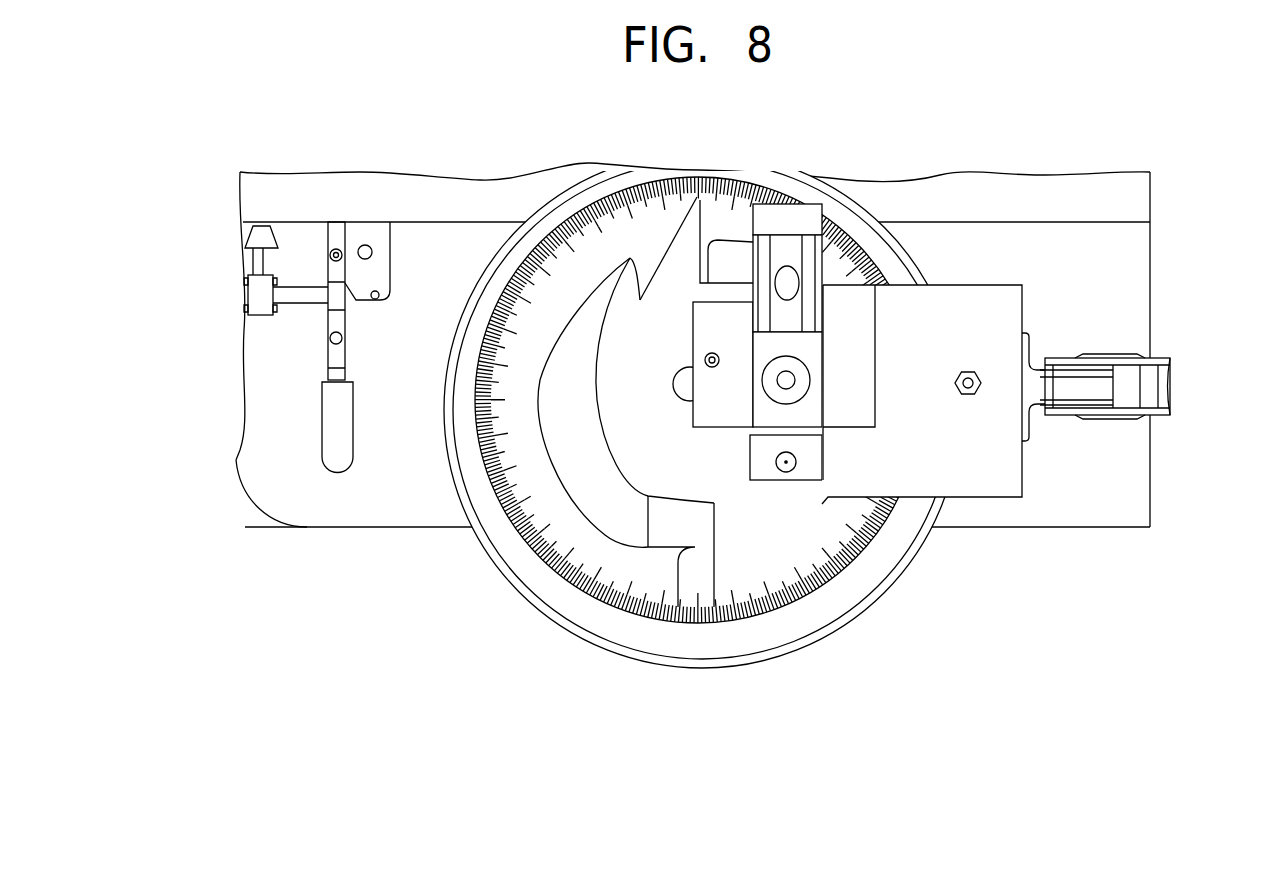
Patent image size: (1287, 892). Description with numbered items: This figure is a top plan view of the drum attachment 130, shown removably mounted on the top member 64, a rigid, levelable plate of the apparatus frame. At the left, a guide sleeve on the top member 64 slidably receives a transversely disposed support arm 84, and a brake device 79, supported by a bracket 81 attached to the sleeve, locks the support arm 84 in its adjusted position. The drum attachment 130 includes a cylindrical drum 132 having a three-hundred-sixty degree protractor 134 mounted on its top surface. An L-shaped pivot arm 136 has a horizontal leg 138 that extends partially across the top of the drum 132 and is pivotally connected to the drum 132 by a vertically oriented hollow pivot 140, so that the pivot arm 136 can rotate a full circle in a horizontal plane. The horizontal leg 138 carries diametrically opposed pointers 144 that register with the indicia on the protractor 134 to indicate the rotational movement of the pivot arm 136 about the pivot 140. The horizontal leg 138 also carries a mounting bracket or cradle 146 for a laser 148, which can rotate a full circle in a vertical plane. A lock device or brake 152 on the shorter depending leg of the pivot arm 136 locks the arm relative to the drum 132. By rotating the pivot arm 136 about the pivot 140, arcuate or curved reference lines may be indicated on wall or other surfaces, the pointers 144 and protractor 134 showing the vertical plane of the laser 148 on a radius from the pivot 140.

The top member 64 is at (738, 303).
The brake device 79 is at (321, 349).
The bracket 81 is at (370, 235).
The support arm 84 is at (1092, 195).
The drum attachment 130 is at (702, 404).
The drum 132 is at (845, 618).
The protractor 134 is at (545, 240).
The pivot arm 136 is at (827, 351).
The horizontal leg 138 is at (929, 438).
The hollow pivot 140 is at (690, 383).
The pointers 144 is at (697, 197).
The mounting bracket or cradle 146 is at (957, 286).
The laser 148 is at (808, 262).
The lock device or brake 152 is at (1126, 405).